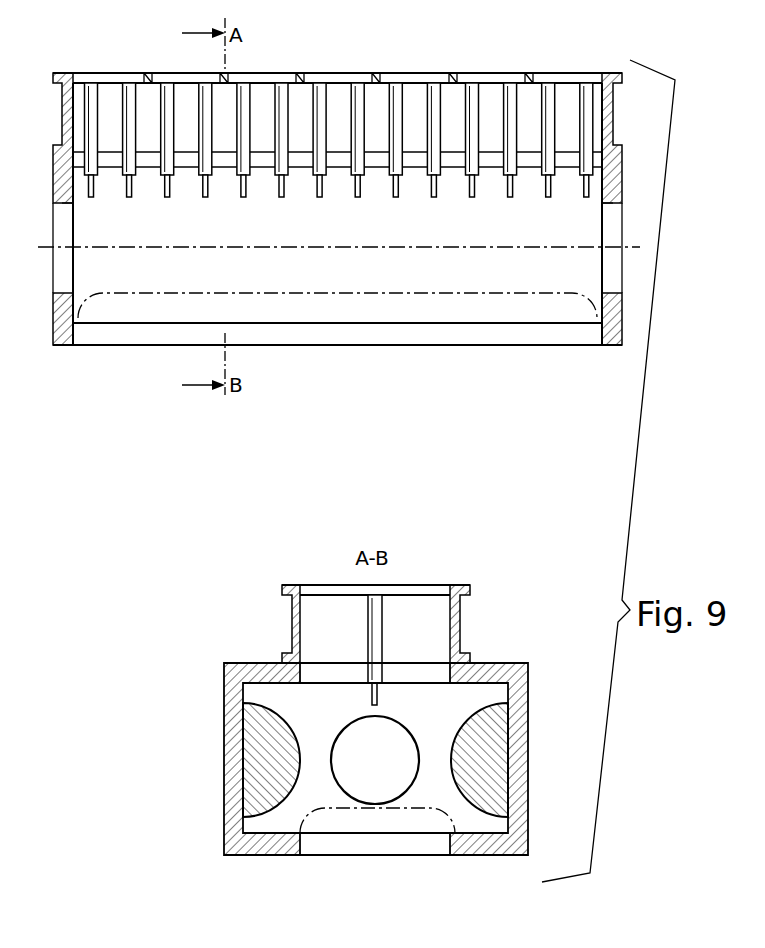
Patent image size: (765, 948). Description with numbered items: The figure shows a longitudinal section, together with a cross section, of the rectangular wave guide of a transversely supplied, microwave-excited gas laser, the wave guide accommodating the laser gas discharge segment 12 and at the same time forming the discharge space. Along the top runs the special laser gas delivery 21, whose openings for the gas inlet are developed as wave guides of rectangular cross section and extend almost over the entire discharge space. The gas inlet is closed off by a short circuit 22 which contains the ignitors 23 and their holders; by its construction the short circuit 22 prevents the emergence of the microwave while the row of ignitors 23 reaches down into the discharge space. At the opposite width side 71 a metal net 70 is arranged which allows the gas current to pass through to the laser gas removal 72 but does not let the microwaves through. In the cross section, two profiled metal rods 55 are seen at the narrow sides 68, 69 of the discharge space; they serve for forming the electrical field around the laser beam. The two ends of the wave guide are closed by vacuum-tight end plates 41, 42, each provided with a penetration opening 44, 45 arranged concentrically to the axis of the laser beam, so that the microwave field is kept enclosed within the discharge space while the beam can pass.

The laser gas discharge segment 12 is at (453, 257).
The laser gas delivery 21 is at (613, 116).
The short circuit 22 is at (149, 73).
The ignitor 23 is at (357, 100).
The end plate 41 is at (67, 345).
The end plate 42 is at (617, 345).
The penetration opening 44 is at (73, 205).
The penetration opening 45 is at (604, 206).
The profiled metal rod 55 is at (255, 775).
The narrow side 68 is at (232, 742).
The narrow side 69 is at (520, 781).
The metal net 70 is at (152, 295).
The width side 71 is at (265, 855).
The laser gas removal 72 is at (105, 333).